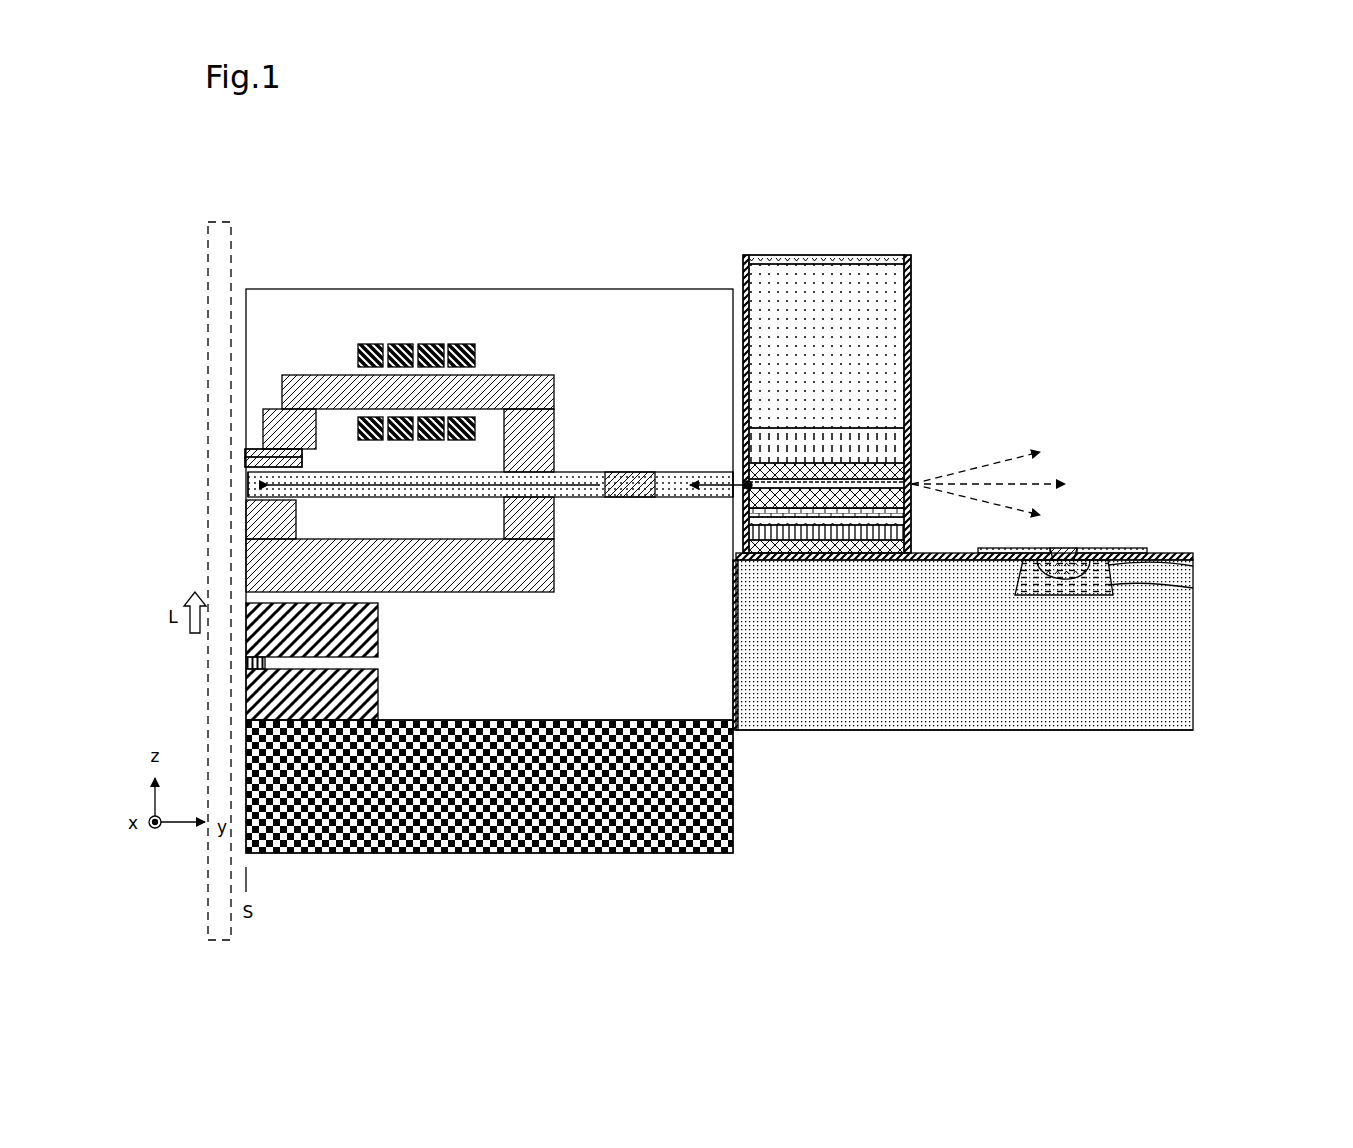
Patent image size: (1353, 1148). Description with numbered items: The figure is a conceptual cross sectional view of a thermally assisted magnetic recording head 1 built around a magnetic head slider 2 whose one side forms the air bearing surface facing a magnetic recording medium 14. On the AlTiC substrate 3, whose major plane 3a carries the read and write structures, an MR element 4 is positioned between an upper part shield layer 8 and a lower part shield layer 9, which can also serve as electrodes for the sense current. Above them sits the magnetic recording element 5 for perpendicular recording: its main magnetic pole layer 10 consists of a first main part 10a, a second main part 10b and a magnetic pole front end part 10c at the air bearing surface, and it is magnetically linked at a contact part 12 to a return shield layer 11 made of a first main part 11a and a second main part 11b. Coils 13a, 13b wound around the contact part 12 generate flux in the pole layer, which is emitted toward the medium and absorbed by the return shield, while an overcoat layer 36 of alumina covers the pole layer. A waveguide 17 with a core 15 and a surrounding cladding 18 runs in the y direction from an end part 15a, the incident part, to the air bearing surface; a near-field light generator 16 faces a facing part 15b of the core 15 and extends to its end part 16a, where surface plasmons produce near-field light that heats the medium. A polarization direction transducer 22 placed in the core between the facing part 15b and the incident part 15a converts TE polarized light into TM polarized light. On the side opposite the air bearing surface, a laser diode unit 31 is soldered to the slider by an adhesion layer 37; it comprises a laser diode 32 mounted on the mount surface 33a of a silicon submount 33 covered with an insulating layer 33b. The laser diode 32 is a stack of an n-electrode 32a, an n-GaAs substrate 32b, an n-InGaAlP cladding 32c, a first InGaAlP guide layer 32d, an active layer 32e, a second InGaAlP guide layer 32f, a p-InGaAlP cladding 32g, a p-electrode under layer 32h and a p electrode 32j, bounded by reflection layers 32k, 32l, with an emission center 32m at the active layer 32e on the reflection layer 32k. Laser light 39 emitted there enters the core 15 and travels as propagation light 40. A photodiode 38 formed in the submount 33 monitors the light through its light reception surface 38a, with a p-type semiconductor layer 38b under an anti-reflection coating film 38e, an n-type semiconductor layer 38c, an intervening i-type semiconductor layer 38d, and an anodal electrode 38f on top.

The thermally assisted magnetic recording head 1 is at (588, 150).
The magnetic head slider 2 is at (485, 272).
The substrate 3 is at (735, 776).
The major plane 3a is at (632, 720).
The MR element 4 is at (246, 662).
The magnetic recording element 5 is at (177, 488).
The upper part shield layer 8 is at (378, 632).
The lower part shield layer 9 is at (378, 698).
The main magnetic pole layer 10 is at (160, 334).
The first main part 10a is at (282, 385).
The second main part 10b is at (264, 428).
The magnetic pole front end part 10c is at (246, 452).
The return shield layer 11 is at (172, 512).
The first main part 11a is at (246, 560).
The second main part 11b is at (246, 520).
The contact part 12 is at (542, 447).
The coil 13a is at (370, 344).
The coil 13b is at (368, 417).
The magnetic recording medium 14 is at (217, 290).
The core 15 is at (484, 472).
The end part 15a is at (738, 500).
The facing part 15b is at (290, 498).
The near-field light generator 16 is at (302, 460).
The end part 16a is at (246, 463).
The waveguide 17 is at (620, 450).
The cladding 18 is at (531, 502).
The polarization direction transducer 22 is at (627, 497).
The laser diode unit 31 is at (1062, 406).
The laser diode 32 is at (975, 362).
The n-electrode 32a is at (911, 262).
The n-GaAs substrate 32b is at (900, 334).
The n-InGaAlP cladding 32c is at (900, 440).
The first InGaAlP guide layer 32d is at (900, 470).
The active layer 32e is at (904, 482).
The second InGaAlP guide layer 32f is at (904, 490).
The p-InGaAlP cladding 32g is at (904, 512).
The p-electrode under layer 32h is at (904, 522).
The p electrode 32j is at (904, 540).
The reflection layer 32k is at (749, 262).
The reflection layer 32l is at (911, 305).
The emission center 32m is at (748, 485).
The submount 33 is at (1228, 658).
The mount surface 33a is at (1150, 548).
The insulating layer 33b is at (1193, 556).
The overcoat layer 36 is at (430, 289).
The adhesion layer 37 is at (737, 672).
The photodiode 38 is at (1092, 500).
The light reception surface 38a is at (1063, 558).
The p-type semiconductor layer 38b is at (1093, 572).
The n-type semiconductor layer 38c is at (1162, 620).
The i-type semiconductor layer 38d is at (1088, 590).
The anti-reflection coating film 38e is at (1078, 558).
The anodal electrode 38f is at (1138, 553).
The laser light 39 is at (700, 490).
The propagation light 40 is at (360, 497).